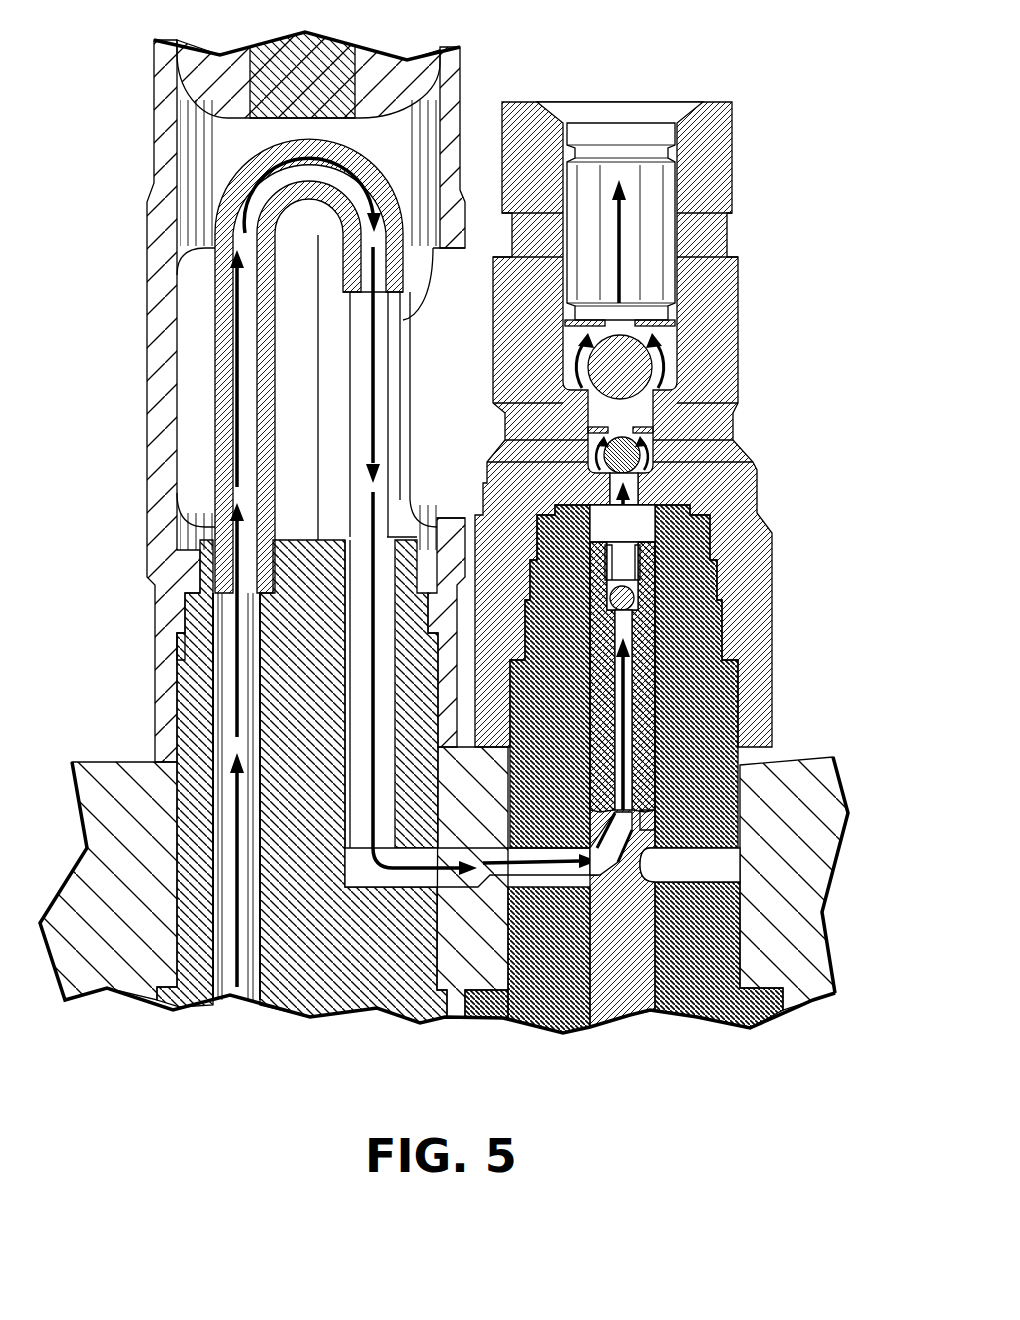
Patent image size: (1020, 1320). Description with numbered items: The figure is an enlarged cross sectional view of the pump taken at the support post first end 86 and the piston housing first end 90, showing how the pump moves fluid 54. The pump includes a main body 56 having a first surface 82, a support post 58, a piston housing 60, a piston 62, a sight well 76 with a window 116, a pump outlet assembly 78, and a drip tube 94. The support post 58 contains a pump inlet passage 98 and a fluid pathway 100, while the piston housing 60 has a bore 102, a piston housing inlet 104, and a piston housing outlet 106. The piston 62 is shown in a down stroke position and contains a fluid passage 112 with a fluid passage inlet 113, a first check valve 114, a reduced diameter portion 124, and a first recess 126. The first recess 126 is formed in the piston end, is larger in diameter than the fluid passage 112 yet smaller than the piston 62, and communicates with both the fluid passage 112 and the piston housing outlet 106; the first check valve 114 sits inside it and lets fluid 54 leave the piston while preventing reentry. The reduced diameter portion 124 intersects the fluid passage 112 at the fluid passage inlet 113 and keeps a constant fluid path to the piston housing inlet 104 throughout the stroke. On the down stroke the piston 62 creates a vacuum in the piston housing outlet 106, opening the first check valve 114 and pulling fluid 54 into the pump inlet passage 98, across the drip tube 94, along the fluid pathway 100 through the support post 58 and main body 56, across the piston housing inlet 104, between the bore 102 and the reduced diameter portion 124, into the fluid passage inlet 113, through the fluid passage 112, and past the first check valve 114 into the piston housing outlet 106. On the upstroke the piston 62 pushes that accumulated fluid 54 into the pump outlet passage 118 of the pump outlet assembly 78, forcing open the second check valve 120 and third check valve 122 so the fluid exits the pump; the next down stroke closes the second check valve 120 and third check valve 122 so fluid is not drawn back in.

The fluid 54 is at (237, 720).
The main body 56 is at (797, 935).
The support post 58 is at (307, 967).
The piston housing 60 is at (718, 772).
The piston 62 is at (628, 988).
The sight well 76 is at (154, 132).
The pump outlet assembly 78 is at (738, 281).
The first surface 82 is at (88, 763).
The support post first end 86 is at (178, 650).
The piston housing first end 90 is at (680, 525).
The drip tube 94 is at (223, 218).
The pump inlet passage 98 is at (233, 747).
The fluid pathway 100 is at (377, 560).
The bore 102 is at (655, 728).
The piston housing inlet 104 is at (500, 873).
The piston housing outlet 106 is at (600, 515).
The fluid passage 112 is at (622, 625).
The fluid passage inlet 113 is at (648, 868).
The first check valve 114 is at (628, 596).
The window 116 is at (185, 360).
The pump outlet passage 118 is at (652, 207).
The second check valve 120 is at (622, 452).
The third check valve 122 is at (630, 363).
The reduced diameter portion 124 is at (655, 818).
The first recess 126 is at (650, 510).